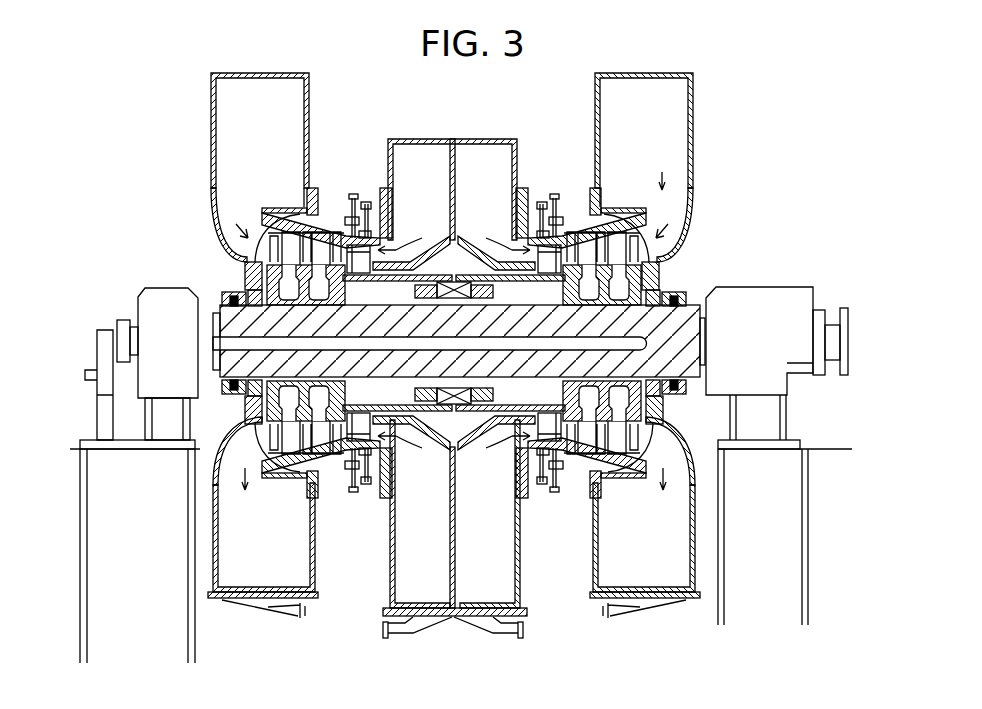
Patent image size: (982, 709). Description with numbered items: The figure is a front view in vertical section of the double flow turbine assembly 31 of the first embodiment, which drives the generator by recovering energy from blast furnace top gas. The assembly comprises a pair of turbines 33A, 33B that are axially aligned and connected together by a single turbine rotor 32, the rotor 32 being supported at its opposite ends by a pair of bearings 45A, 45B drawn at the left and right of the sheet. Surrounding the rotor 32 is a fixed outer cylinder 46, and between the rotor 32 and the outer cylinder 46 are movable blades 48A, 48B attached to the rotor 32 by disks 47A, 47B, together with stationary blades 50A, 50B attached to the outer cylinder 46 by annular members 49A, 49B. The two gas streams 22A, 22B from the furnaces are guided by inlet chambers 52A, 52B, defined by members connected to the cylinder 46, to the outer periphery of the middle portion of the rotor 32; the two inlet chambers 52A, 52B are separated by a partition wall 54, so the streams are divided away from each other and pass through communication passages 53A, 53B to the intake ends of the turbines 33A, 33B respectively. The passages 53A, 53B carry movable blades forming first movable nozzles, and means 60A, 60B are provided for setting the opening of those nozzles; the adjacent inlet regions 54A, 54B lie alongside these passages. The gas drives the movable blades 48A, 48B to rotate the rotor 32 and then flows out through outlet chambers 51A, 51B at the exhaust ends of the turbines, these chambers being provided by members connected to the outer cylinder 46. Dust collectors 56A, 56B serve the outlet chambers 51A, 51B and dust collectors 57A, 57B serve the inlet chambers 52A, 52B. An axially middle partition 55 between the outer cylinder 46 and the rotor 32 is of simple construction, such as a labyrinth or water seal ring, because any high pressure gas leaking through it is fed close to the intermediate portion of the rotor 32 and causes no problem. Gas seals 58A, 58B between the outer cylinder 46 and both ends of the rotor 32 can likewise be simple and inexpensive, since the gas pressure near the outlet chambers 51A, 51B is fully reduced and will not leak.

The turbine assembly 31 is at (717, 248).
The turbine rotor 32 is at (688, 330).
The turbine 33A is at (238, 294).
The turbine 33B is at (665, 408).
The bearing 45A is at (149, 298).
The bearing 45B is at (796, 312).
The fixed outer cylinder 46 is at (478, 250).
The disk 47A is at (338, 404).
The disk 47B is at (560, 403).
The movable blades 48A is at (303, 478).
The movable blades 48B is at (642, 455).
The annular member 49A is at (290, 244).
The annular member 49B is at (602, 242).
The stationary blades 50A is at (287, 242).
The stationary blades 50B is at (630, 248).
The outlet chamber 51A is at (263, 540).
The outlet chamber 51B is at (650, 555).
The inlet chamber 52A is at (424, 544).
The inlet chamber 52B is at (494, 544).
The communication passage 53A is at (376, 238).
The communication passage 53B is at (510, 288).
The partition wall 54 is at (448, 162).
The inlet chamber 54A is at (360, 272).
The inlet chamber 54B is at (548, 260).
The axially middle partition 55 is at (454, 404).
The dust collector 56A is at (265, 608).
The dust collector 56B is at (640, 608).
The dust collector 57A is at (411, 632).
The dust collector 57B is at (500, 632).
The gas seal 58A is at (232, 389).
The gas seal 58B is at (664, 298).
The nozzle opening setting means 60A is at (350, 208).
The nozzle opening setting means 60B is at (553, 205).
The gas stream 22A is at (421, 446).
The gas stream 22B is at (510, 445).